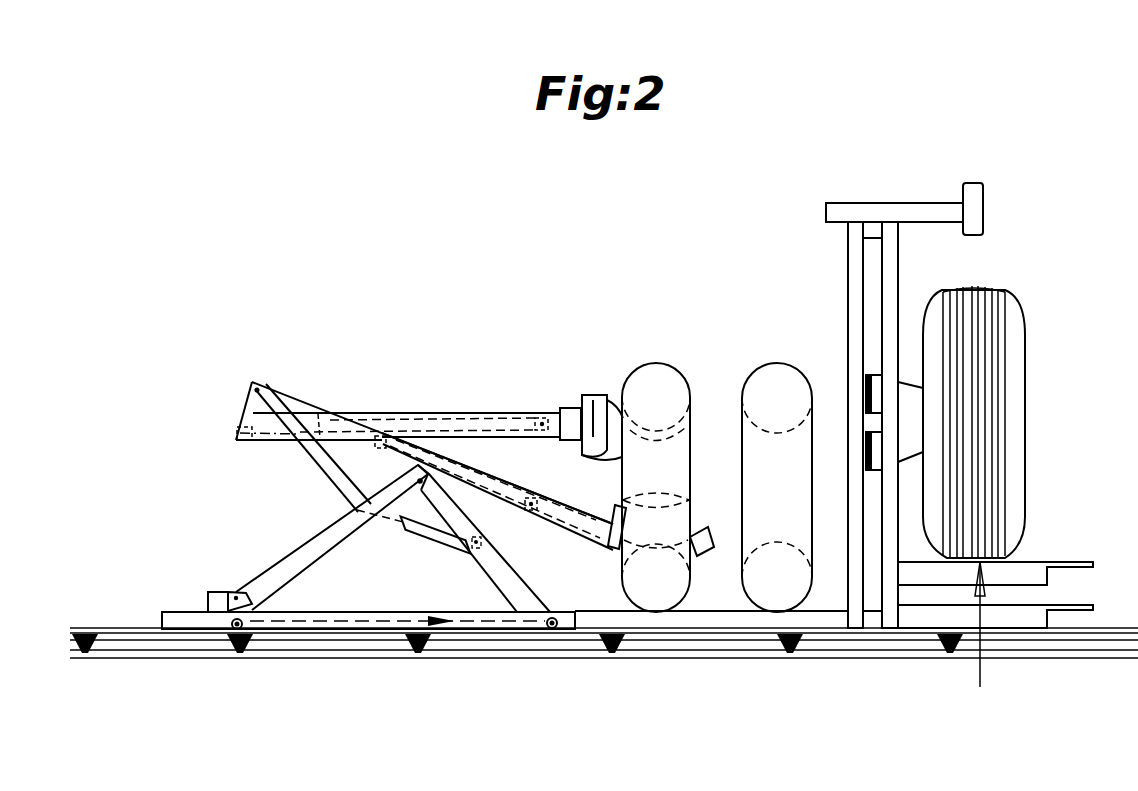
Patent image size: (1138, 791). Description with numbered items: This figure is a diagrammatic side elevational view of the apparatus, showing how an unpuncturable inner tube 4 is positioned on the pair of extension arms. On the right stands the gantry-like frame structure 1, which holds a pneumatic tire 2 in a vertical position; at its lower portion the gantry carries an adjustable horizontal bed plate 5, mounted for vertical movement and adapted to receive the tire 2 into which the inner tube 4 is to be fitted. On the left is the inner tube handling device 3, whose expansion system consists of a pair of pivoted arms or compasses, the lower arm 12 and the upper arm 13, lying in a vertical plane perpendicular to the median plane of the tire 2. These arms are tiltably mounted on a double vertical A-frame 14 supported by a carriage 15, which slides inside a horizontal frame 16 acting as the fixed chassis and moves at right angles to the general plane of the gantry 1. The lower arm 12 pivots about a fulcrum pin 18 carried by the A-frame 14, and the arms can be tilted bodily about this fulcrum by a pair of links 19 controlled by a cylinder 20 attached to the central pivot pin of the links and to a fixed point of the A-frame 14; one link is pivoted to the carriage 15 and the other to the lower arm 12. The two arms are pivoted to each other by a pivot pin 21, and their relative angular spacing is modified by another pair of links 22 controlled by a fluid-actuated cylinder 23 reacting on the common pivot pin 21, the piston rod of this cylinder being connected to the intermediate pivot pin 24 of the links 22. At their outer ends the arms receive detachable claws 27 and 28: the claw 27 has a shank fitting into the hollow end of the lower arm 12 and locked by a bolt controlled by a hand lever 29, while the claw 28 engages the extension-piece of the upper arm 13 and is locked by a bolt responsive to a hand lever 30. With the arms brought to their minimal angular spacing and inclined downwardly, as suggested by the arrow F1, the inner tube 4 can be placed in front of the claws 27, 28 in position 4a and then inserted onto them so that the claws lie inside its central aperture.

The gantry-like frame structure 1 is at (850, 242).
The pneumatic tire 2 is at (1016, 350).
The inner tube handling device 3 is at (416, 396).
The unpuncturable inner tube 4 is at (655, 380).
The inner tube position 4a is at (768, 380).
The adjustable horizontal bed plate 5 is at (1015, 562).
The lower arm 12 is at (550, 508).
The upper arm 13 is at (461, 416).
The double vertical A-frame 14 is at (322, 556).
The carriage 15 is at (376, 614).
The horizontal frame 16 is at (186, 608).
The fulcrum pin 18 is at (412, 472).
The pair of links 19 is at (345, 493).
The cylinder 20 is at (418, 540).
The pivot pin 21 is at (237, 432).
The pair of links 22 is at (489, 437).
The fluid-actuated cylinder 23 is at (318, 430).
The intermediate pivot pin 24 is at (381, 436).
The claw 27 is at (705, 527).
The claw 28 is at (600, 395).
The hand lever 29 is at (607, 520).
The hand lever 30 is at (578, 408).
The force arrow F1 is at (250, 537).